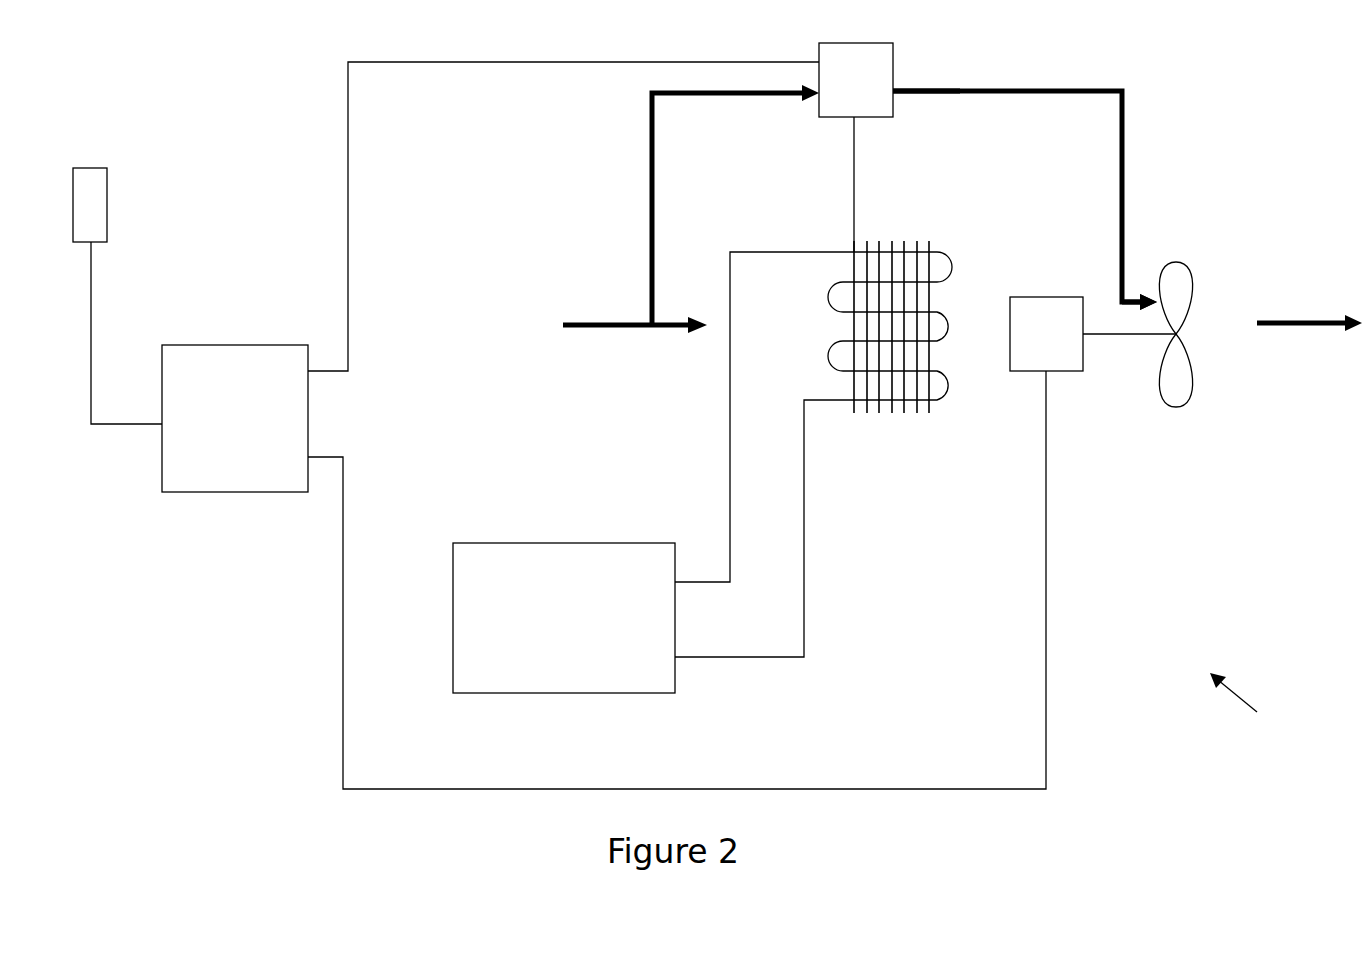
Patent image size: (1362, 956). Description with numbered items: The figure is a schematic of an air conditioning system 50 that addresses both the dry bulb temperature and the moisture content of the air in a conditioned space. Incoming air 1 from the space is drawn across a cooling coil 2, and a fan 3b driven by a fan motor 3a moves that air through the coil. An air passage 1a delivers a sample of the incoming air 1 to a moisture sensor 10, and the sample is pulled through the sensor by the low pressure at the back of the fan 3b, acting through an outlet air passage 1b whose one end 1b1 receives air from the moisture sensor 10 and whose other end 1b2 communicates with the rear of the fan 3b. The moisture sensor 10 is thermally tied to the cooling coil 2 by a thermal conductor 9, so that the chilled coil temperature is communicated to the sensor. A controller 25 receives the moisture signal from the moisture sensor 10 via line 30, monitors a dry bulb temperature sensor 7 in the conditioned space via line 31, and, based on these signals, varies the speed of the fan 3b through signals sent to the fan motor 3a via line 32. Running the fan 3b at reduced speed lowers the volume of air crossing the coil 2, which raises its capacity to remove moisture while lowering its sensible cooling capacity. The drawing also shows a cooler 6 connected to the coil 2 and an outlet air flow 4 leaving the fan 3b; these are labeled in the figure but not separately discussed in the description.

The incoming air 1 is at (635, 307).
The air passage 1a is at (702, 206).
The outlet air passage 1b is at (1025, 200).
The end of outlet air passage 1b1 is at (929, 114).
The end of outlet air passage 1b2 is at (1154, 267).
The cooling coil 2 is at (813, 449).
The fan motor 3a is at (1093, 313).
The fan 3b is at (1202, 334).
The outlet air stream 4 is at (1309, 295).
The cooler 6 is at (564, 600).
The dry bulb temperature sensor 7 is at (90, 181).
The thermal conductor 9 is at (840, 184).
The moisture sensor 10 is at (891, 77).
The controller 25 is at (235, 395).
The line 30 is at (563, 196).
The line 31 is at (126, 333).
The line 32 is at (677, 580).
The air conditioning system 50 is at (1255, 712).